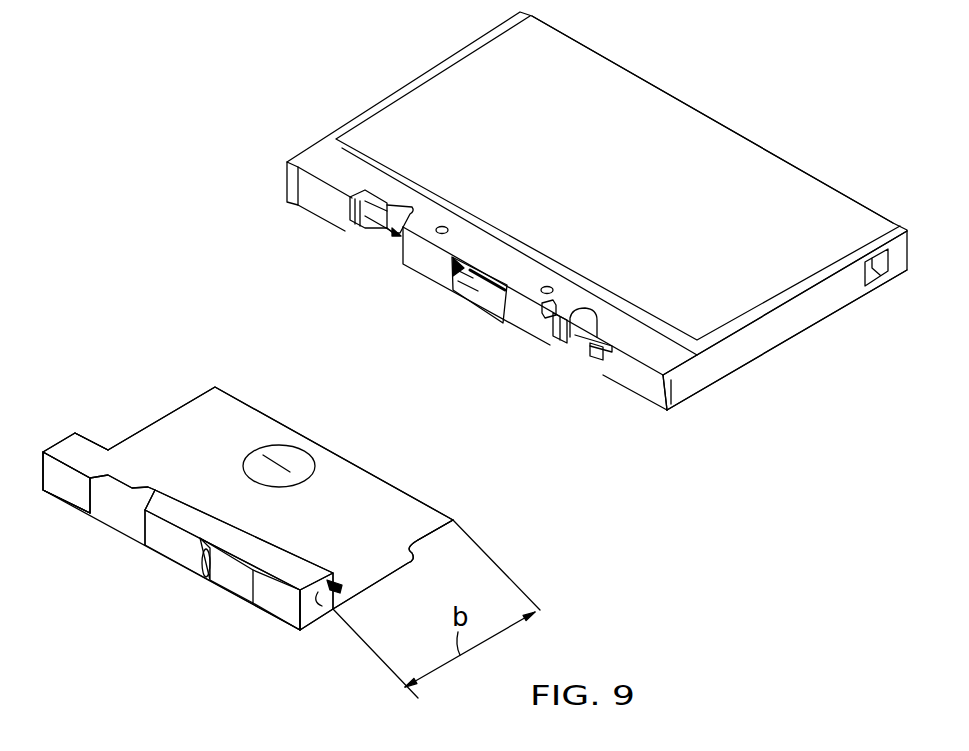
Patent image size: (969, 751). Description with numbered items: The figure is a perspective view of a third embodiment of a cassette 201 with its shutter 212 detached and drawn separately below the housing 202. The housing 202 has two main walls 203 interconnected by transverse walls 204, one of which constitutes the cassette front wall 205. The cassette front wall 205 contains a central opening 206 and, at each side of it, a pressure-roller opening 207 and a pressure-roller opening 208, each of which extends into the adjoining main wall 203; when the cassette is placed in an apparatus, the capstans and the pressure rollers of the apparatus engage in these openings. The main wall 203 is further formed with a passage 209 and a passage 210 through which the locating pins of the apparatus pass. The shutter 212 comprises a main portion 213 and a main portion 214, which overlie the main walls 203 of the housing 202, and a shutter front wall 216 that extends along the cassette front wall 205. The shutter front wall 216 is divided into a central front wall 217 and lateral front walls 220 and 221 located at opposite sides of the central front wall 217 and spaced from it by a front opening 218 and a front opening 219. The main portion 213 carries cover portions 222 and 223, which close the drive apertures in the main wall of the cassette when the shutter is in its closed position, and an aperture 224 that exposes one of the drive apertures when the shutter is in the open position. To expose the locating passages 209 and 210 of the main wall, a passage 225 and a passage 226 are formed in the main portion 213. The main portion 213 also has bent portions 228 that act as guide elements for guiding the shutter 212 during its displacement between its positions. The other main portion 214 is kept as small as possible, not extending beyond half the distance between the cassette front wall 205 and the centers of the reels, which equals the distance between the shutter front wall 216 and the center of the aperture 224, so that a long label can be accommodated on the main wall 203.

The cassette 201 is at (370, 102).
The housing 202 is at (760, 140).
The main wall 203 is at (572, 66).
The transverse wall 204 is at (815, 307).
The cassette front wall 205 is at (636, 380).
The central opening 206 is at (480, 284).
The pressure-roller opening 207 is at (377, 238).
The pressure-roller opening 208 is at (577, 349).
The passage 209 is at (444, 225).
The passage 210 is at (548, 285).
The shutter 212 is at (240, 398).
The main portion 213 is at (140, 430).
The main portion 214 is at (55, 440).
The shutter front wall 216 is at (40, 485).
The central front wall 217 is at (163, 543).
The front opening 218 is at (117, 520).
The front opening 219 is at (240, 575).
The lateral front wall 220 is at (80, 494).
The lateral front wall 221 is at (277, 603).
The cover portion 222 is at (203, 418).
The cover portion 223 is at (404, 508).
The aperture 224 is at (280, 448).
The passage 225 is at (208, 578).
The passage 226 is at (320, 618).
The bent portion 228 is at (330, 613).